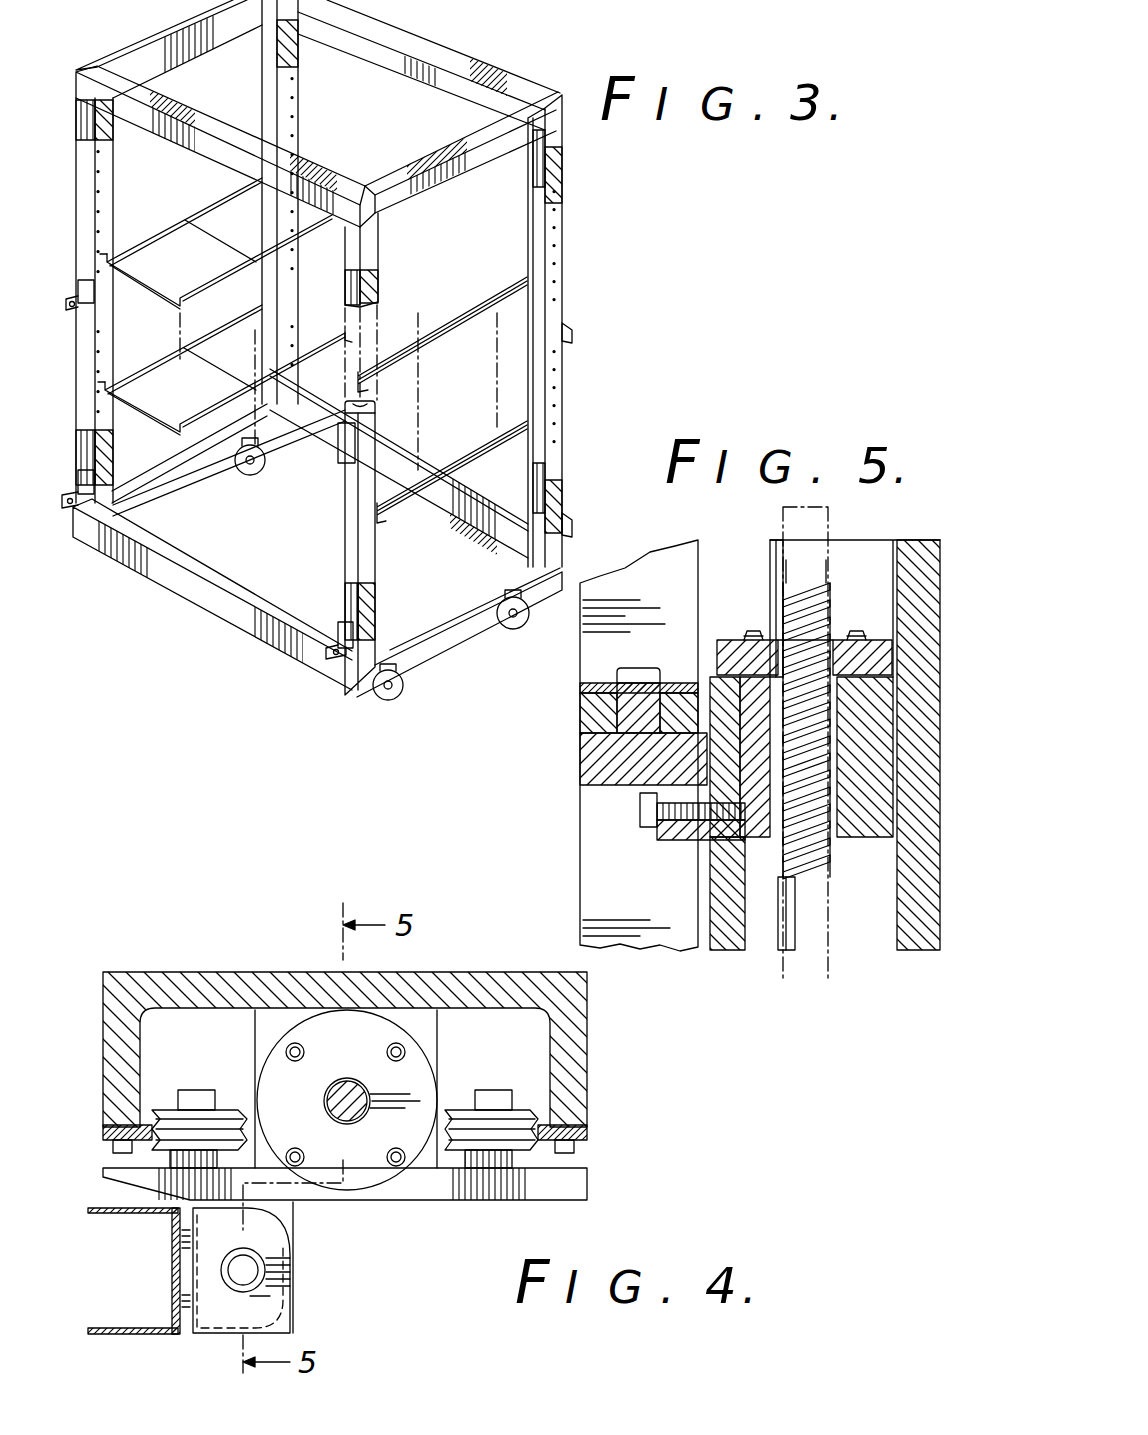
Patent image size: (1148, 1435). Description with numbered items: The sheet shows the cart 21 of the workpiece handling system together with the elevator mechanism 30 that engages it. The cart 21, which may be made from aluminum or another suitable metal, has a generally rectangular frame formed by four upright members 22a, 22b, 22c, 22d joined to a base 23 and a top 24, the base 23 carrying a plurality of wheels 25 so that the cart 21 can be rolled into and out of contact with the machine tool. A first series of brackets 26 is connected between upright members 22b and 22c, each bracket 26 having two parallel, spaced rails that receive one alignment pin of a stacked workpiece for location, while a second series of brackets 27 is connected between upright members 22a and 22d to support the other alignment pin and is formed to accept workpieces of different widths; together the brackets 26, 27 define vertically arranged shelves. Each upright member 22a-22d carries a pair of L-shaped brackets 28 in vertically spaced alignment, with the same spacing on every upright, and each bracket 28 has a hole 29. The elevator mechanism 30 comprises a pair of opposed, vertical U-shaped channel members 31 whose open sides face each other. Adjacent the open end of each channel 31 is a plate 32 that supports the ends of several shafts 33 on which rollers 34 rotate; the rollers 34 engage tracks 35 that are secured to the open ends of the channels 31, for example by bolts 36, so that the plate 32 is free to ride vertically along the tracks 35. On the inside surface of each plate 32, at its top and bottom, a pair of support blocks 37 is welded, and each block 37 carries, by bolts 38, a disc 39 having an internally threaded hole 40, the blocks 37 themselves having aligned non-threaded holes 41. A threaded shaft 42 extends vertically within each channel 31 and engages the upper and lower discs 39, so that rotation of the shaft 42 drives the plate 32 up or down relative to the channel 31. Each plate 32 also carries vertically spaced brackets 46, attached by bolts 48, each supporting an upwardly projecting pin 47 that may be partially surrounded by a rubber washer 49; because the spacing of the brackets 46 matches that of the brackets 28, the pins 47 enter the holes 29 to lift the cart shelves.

In FIG. 3, the cart 21 is at (205, 614).
In FIG. 3, the upright member 22a is at (108, 180).
In FIG. 3, the upright member 22b is at (372, 249).
In FIG. 3, the upright member 22c is at (563, 207).
In FIG. 3, the upright member 22d is at (292, 99).
In FIG. 5, the upright member 22d is at (600, 866).
In FIG. 4, the upright member 22d is at (140, 1213).
In FIG. 3, the base 23 is at (320, 457).
In FIG. 3, the top 24 is at (464, 58).
In FIG. 3, the wheel 25 is at (385, 702).
In FIG. 3, the bracket 26 is at (445, 324).
In FIG. 3, the bracket 27 is at (153, 296).
In FIG. 3, the L-shaped bracket 28 is at (80, 293).
In FIG. 3, the hole 29 is at (74, 308).
In FIG. 5, the elevator mechanism 30 is at (741, 550).
In FIG. 4, the elevator mechanism 30 is at (377, 1240).
In FIG. 5, the U-shaped channel member 31 is at (923, 662).
In FIG. 4, the U-shaped channel member 31 is at (180, 972).
In FIG. 5, the plate 32 is at (720, 900).
In FIG. 4, the plate 32 is at (443, 1193).
In FIG. 4, the shaft 33 is at (198, 1090).
In FIG. 4, the roller 34 is at (160, 1113).
In FIG. 5, the track 35 is at (783, 915).
In FIG. 4, the track 35 is at (107, 1131).
In FIG. 4, the bolt 36 is at (117, 1153).
In FIG. 5, the support block 37 is at (887, 753).
In FIG. 4, the support block 37 is at (417, 1023).
In FIG. 5, the bolt 38 is at (850, 631).
In FIG. 4, the bolt 38 is at (289, 1049).
In FIG. 5, the disc 39 is at (727, 651).
In FIG. 4, the disc 39 is at (323, 1033).
In FIG. 5, the internally threaded hole 40 is at (788, 640).
In FIG. 4, the internally threaded hole 40 is at (355, 1085).
In FIG. 5, the non-threaded hole 41 is at (833, 735).
In FIG. 5, the threaded shaft 42 is at (790, 603).
In FIG. 4, the threaded shaft 42 is at (330, 1097).
In FIG. 5, the bracket 46 is at (590, 755).
In FIG. 4, the bracket 46 is at (290, 1318).
In FIG. 5, the pin 47 is at (623, 693).
In FIG. 4, the pin 47 is at (250, 1263).
In FIG. 5, the bolt 48 is at (647, 813).
In FIG. 5, the rubber washer 49 is at (590, 718).